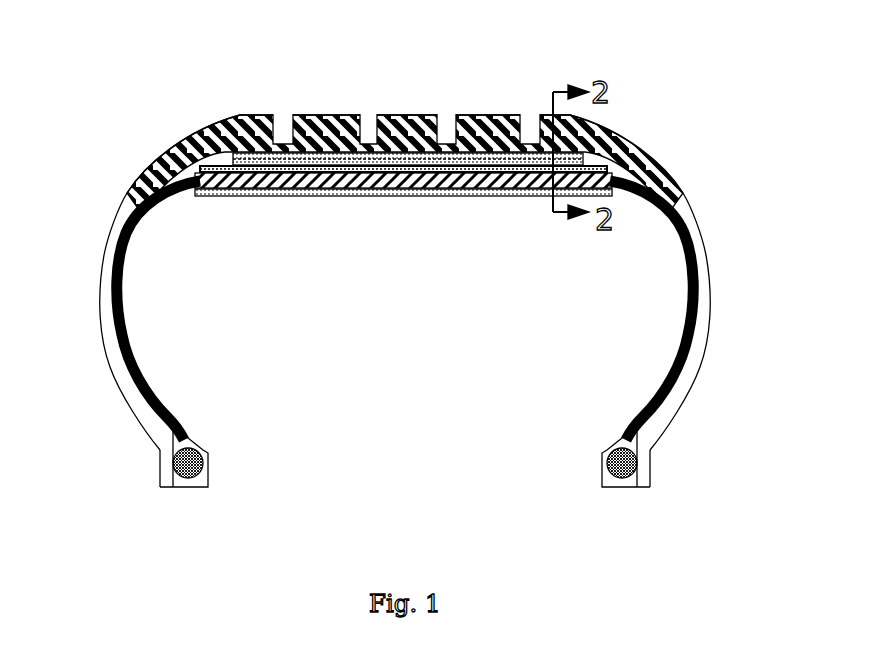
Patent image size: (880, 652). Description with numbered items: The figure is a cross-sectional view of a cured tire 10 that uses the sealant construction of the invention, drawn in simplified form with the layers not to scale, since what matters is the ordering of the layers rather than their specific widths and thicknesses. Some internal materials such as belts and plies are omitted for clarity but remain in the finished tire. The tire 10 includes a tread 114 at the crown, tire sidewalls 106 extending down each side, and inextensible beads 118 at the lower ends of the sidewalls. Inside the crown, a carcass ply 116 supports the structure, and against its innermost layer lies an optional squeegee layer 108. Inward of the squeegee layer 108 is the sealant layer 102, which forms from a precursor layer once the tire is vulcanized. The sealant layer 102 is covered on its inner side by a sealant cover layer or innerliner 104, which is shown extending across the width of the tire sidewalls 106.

The tire 10 is at (658, 116).
The sealant layer 102 is at (492, 196).
The innerliner 104 is at (352, 196).
The tire sidewalls 106 is at (99, 295).
The squeegee layer 108 is at (256, 154).
The tread 114 is at (335, 120).
The carcass ply 116 is at (478, 165).
The inextensible beads 118 is at (171, 481).